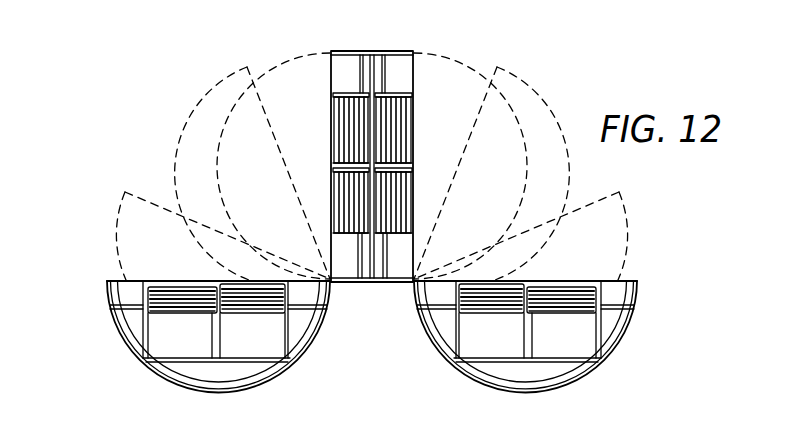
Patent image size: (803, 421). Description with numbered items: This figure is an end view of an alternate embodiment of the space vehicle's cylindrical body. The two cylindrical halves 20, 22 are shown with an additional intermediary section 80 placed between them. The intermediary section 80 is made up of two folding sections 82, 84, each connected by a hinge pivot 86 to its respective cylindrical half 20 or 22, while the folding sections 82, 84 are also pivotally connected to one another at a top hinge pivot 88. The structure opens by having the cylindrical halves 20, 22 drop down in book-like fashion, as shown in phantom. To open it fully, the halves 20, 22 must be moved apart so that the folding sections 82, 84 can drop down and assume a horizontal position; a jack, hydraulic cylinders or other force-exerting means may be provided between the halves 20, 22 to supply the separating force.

The cylindrical half 20 is at (487, 63).
The cylindrical half 22 is at (280, 62).
The intermediary section 80 is at (414, 49).
The folding section 82 is at (395, 283).
The folding section 84 is at (353, 283).
The hinge pivot 86 is at (332, 283).
The top hinge pivot 88 is at (372, 50).